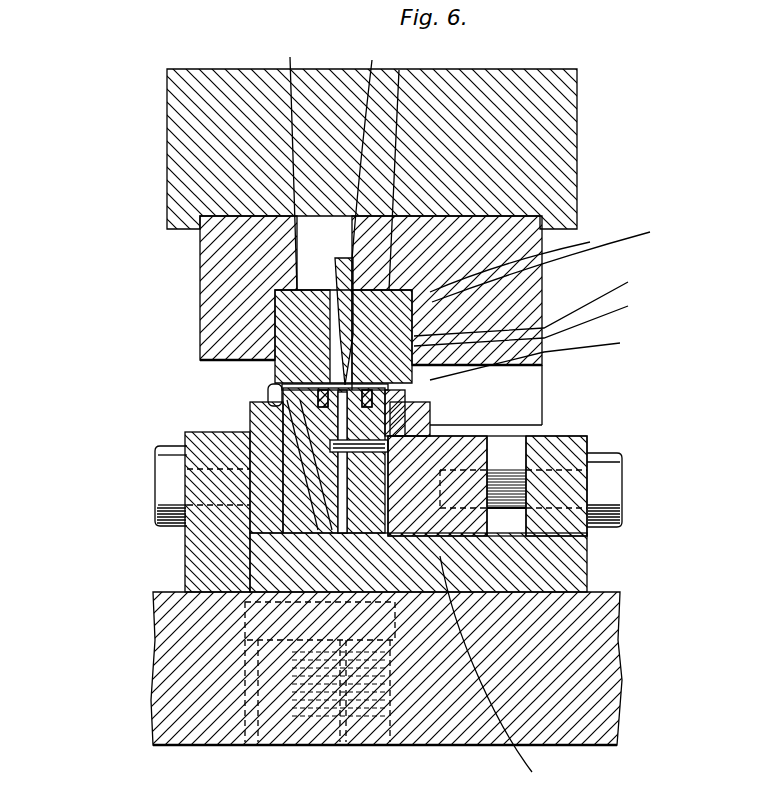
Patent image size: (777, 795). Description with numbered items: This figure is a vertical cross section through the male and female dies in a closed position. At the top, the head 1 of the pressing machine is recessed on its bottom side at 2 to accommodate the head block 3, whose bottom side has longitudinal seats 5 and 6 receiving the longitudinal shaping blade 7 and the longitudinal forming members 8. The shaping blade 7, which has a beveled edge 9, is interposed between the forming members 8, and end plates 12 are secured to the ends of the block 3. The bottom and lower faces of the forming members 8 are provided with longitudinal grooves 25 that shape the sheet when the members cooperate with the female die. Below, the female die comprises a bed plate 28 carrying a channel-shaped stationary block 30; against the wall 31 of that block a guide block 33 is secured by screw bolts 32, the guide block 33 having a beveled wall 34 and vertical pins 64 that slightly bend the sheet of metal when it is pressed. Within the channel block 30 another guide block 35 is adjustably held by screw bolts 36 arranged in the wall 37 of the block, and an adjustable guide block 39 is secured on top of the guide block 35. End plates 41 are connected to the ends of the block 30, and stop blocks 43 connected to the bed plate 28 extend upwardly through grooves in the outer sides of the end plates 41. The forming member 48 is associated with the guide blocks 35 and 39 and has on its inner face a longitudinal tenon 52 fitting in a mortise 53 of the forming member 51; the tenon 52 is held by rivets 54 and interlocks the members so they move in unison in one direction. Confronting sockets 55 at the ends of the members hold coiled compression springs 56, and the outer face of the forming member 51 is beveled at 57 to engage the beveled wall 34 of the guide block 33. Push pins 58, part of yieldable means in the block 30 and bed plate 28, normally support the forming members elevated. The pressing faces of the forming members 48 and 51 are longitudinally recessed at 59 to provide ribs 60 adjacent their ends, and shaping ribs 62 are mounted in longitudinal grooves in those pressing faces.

The head 1 is at (578, 135).
The recess 2 is at (543, 222).
The head block 3 is at (545, 272).
The longitudinal seat 5 is at (342, 258).
The longitudinal seat 6 is at (341, 161).
The shaping blade 7 is at (355, 284).
The forming member 8 is at (158, 304).
The beveled edge 9 is at (270, 386).
The end plate 12 is at (543, 374).
The longitudinal groove 25 is at (535, 298).
The bed plate 28 is at (622, 620).
The stationary block 30 is at (540, 582).
The wall 31 is at (186, 434).
The screw bolt 32 is at (165, 458).
The guide block 33 is at (252, 528).
The beveled wall 34 is at (160, 636).
The guide block 35 is at (470, 432).
The screw bolt 36 is at (617, 464).
The wall 37 is at (584, 438).
The adjustable guide block 39 is at (396, 404).
The end plate 41 is at (586, 545).
The stop block 43 is at (448, 744).
The forming member 48 is at (502, 670).
The forming member 51 is at (157, 735).
The tenon 52 is at (280, 420).
The mortise 53 is at (265, 400).
The rivet 54 is at (540, 353).
The socket 55 is at (622, 696).
The coiled compression spring 56 is at (485, 747).
The beveled face 57 is at (250, 460).
The push pin 58 is at (243, 745).
The longitudinal recess 59 is at (535, 317).
The rib 60 is at (524, 258).
The shaping rib 62 is at (157, 358).
The vertical pin 64 is at (275, 392).